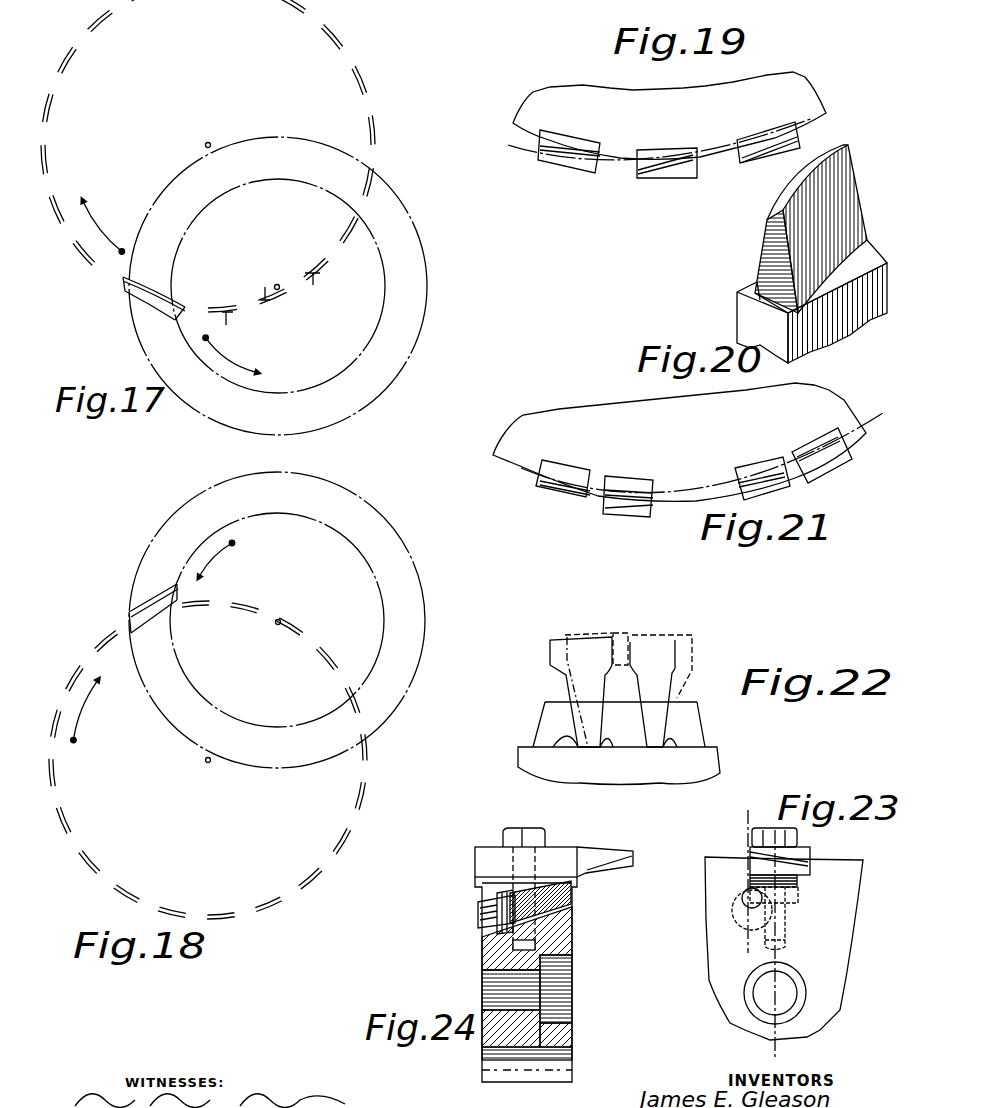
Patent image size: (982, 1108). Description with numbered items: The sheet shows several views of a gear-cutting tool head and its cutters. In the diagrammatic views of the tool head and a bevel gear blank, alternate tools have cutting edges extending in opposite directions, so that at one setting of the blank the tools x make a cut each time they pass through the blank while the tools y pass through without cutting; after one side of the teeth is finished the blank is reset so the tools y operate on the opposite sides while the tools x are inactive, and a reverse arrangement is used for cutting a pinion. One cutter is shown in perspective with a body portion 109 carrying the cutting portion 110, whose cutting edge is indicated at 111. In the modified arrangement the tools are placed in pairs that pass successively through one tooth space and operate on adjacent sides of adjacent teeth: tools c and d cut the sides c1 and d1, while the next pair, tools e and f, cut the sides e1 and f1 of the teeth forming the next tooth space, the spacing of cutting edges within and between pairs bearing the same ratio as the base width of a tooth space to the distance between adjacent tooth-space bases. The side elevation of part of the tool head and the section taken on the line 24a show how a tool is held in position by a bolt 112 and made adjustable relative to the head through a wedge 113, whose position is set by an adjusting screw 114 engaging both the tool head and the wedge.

In FIG. 20, the body portion 109 is at (747, 305).
In FIG. 20, the cutting portion 110 is at (840, 202).
In FIG. 20, the cutting edge 111 is at (763, 253).
In FIG. 24, the bolt 112 is at (537, 838).
In FIG. 24, the wedge 113 is at (488, 888).
In FIG. 23, the adjusting screw 114 is at (740, 905).
In FIG. 24, the adjusting screw 114 is at (482, 923).
In FIG. 23, the section line 24a is at (753, 932).
In FIG. 17, the tools x is at (84, 262).
In FIG. 17, the tools y is at (123, 296).
In FIG. 21, the tool c is at (569, 471).
In FIG. 22, the tool c is at (560, 682).
In FIG. 21, the tool d is at (624, 484).
In FIG. 22, the tool d is at (622, 702).
In FIG. 21, the tool e is at (756, 473).
In FIG. 22, the tool e is at (660, 680).
In FIG. 21, the tool f is at (808, 452).
In FIG. 22, the tool f is at (677, 687).
In FIG. 22, the tooth side c1 is at (549, 761).
In FIG. 22, the tooth side d1 is at (623, 759).
In FIG. 22, the tooth side e1 is at (649, 765).
In FIG. 22, the tooth side f1 is at (687, 749).